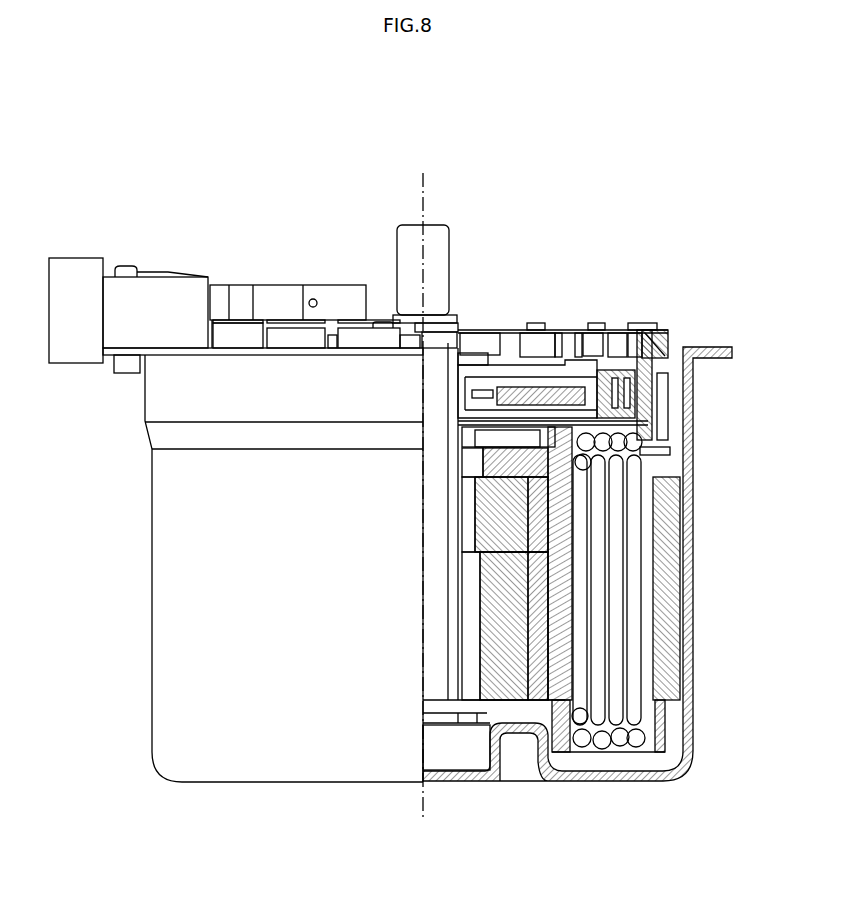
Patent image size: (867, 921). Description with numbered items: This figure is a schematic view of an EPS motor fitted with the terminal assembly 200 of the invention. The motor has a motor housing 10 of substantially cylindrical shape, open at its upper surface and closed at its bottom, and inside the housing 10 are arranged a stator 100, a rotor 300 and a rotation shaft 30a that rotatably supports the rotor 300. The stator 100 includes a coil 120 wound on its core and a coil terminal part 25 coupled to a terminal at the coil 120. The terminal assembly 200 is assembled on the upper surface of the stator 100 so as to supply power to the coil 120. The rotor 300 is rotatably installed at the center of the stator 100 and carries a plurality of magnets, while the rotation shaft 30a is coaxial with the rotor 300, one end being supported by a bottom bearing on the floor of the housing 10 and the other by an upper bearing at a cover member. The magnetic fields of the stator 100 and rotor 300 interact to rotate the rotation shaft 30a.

The motor housing 10 is at (191, 583).
The rotation shaft 30a is at (433, 228).
The terminal assembly 200 is at (552, 328).
The coil terminal part 25 is at (648, 330).
The stator 100 is at (668, 597).
The coil 120 is at (640, 553).
The rotor 300 is at (515, 657).